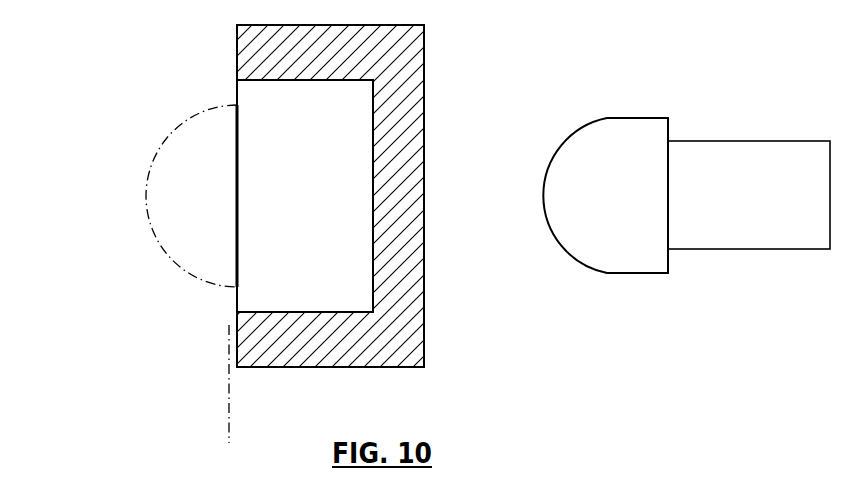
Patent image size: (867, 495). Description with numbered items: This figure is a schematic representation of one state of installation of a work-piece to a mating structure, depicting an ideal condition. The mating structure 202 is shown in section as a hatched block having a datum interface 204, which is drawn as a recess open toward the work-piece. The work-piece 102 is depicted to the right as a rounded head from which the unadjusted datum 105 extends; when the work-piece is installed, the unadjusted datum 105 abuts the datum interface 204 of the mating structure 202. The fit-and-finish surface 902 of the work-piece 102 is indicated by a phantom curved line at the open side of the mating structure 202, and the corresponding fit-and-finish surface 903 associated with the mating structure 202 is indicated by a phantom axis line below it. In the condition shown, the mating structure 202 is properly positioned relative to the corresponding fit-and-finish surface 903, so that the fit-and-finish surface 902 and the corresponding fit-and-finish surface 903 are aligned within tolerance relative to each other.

The work-piece 102 is at (622, 132).
The unadjusted datum 105 is at (722, 152).
The mating structure 202 is at (424, 165).
The datum interface 204 is at (373, 221).
The fit-and-finish surface 902 is at (152, 195).
The corresponding fit-and-finish surface 903 is at (229, 367).